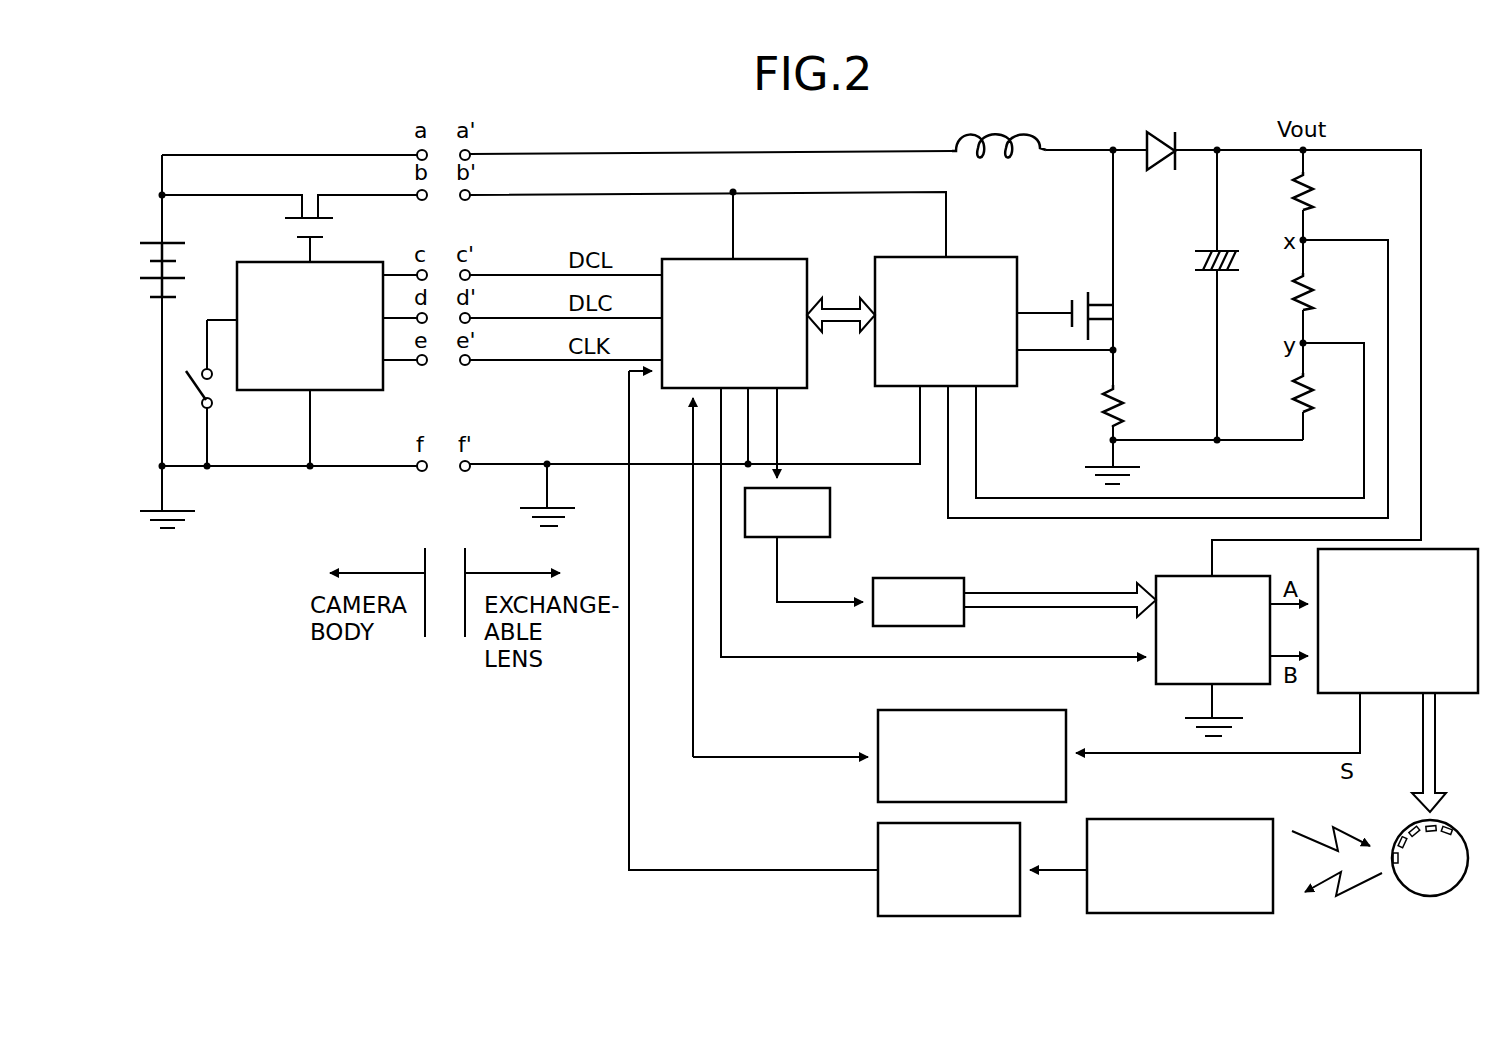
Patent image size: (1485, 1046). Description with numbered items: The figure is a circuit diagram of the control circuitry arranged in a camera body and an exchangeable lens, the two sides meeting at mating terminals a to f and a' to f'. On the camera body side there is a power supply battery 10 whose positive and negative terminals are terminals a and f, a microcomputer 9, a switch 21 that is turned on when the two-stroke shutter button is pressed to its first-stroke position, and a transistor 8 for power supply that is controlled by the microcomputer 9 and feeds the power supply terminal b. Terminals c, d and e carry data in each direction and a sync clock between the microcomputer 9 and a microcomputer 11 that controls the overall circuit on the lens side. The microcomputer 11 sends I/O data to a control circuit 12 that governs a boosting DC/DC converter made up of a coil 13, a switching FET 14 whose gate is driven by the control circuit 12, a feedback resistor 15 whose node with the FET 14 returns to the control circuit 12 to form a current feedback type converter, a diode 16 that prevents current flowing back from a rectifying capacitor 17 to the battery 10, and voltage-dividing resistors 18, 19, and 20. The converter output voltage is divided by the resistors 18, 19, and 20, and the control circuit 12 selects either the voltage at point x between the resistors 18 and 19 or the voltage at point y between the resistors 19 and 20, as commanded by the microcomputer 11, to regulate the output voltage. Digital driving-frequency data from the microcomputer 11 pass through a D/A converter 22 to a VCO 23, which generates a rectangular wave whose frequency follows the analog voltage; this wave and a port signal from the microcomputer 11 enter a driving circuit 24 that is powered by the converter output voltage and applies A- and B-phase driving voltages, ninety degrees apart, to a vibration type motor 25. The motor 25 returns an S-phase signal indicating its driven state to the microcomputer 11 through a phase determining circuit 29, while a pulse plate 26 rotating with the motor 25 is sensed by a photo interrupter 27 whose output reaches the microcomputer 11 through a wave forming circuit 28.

The transistor for power supply 8 is at (333, 225).
The microcomputer 9 is at (256, 262).
The power supply battery 10 is at (176, 283).
The microcomputer 11 is at (692, 259).
The control circuit 12 is at (907, 257).
The coil 13 is at (1040, 137).
The switching FET 14 is at (1072, 304).
The feedback resistor 15 is at (1123, 395).
The diode 16 is at (1150, 135).
The rectifying capacitor 17 is at (1228, 252).
The voltage-dividing resistor 18 is at (1313, 183).
The voltage-dividing resistor 19 is at (1313, 284).
The voltage-dividing resistor 20 is at (1293, 379).
The switch 21 is at (213, 395).
The D/A converter 22 is at (832, 510).
The VCO 23 is at (920, 578).
The driving circuit 24 is at (1179, 576).
The vibration type motor 25 is at (1338, 694).
The pulse plate 26 is at (1395, 835).
The photo interrupter 27 is at (1131, 819).
The wave forming circuit 28 is at (878, 850).
The phase determining circuit 29 is at (1024, 710).